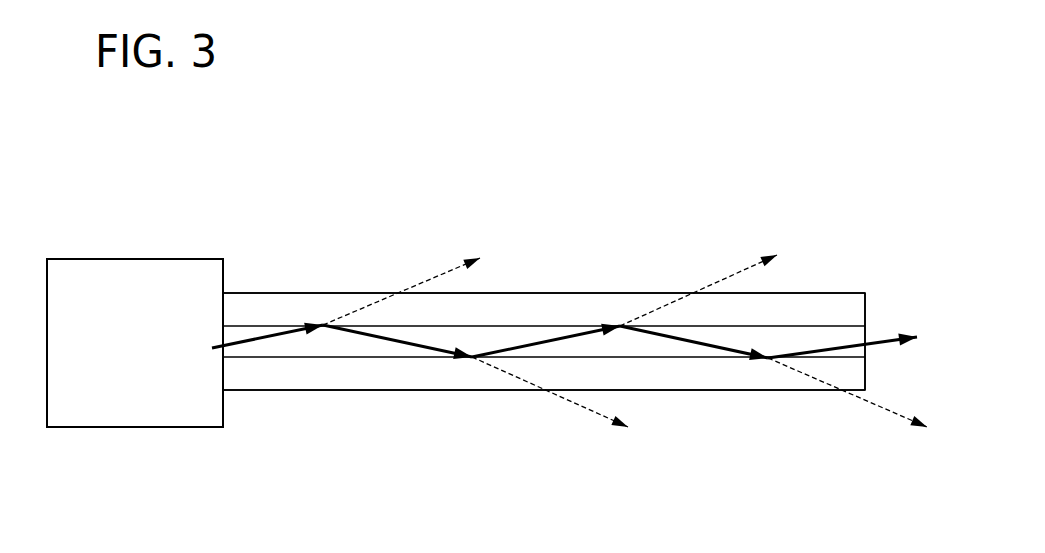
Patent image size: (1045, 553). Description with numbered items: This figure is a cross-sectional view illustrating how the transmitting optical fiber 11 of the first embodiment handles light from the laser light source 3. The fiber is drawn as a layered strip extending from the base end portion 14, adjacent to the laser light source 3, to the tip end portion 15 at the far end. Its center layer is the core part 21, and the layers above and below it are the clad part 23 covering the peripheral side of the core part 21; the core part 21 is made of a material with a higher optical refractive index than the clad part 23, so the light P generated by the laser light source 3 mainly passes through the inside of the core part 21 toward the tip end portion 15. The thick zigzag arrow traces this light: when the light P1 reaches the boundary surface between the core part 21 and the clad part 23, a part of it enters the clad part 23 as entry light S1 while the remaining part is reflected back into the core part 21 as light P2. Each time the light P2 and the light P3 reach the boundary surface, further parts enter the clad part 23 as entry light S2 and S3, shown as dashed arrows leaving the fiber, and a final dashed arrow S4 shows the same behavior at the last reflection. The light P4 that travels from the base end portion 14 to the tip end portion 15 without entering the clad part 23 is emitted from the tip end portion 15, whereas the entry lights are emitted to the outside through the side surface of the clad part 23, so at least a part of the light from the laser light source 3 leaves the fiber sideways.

The laser light source 3 is at (135, 405).
The transmitting optical fiber 11 is at (709, 148).
The base end portion 14 is at (234, 285).
The tip end portion 15 is at (871, 294).
The core part 21 is at (499, 335).
The clad part 23 is at (283, 300).
The light P is at (263, 340).
The light P1 is at (397, 340).
The light P2 is at (532, 340).
The light P3 is at (681, 342).
The light P4 is at (889, 330).
The entry light S1 is at (431, 275).
The entry light S2 is at (562, 403).
The entry light S3 is at (730, 272).
The leaked light S4 is at (877, 408).